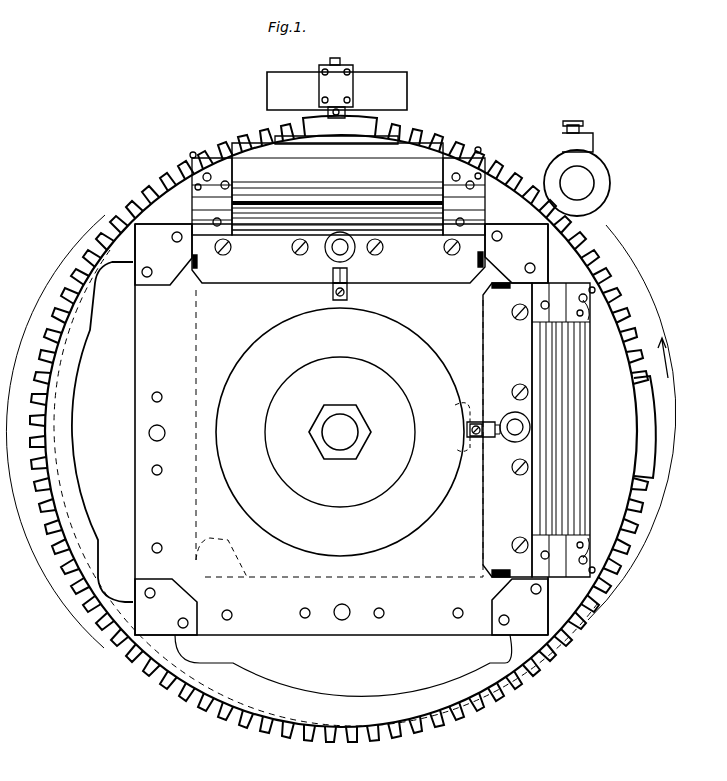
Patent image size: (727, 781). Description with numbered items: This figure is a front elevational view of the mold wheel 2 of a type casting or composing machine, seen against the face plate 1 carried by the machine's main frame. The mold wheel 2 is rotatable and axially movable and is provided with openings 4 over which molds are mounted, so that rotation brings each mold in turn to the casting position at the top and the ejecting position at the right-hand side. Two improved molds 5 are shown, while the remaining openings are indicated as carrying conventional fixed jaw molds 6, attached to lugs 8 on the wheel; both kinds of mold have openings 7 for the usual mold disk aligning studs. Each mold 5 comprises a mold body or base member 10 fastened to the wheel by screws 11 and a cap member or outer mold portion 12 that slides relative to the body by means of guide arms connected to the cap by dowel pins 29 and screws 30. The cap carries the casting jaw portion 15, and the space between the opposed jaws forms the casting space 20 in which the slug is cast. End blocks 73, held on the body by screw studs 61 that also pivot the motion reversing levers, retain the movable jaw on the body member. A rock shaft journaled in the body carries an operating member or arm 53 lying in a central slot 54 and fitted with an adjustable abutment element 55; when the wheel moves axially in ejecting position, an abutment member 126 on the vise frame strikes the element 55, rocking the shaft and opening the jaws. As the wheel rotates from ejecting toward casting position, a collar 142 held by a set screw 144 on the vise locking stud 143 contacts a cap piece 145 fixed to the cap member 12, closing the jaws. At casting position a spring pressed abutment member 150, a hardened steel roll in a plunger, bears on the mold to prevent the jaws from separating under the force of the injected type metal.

The face plate 1 is at (402, 78).
The mold wheel 2 is at (66, 302).
The openings 4 is at (130, 392).
The molds 5 is at (497, 160).
The molds of fixed jaw form 6 is at (240, 567).
The openings 7 is at (291, 247).
The lugs 8 is at (148, 222).
The mold body or base member 10 is at (254, 275).
The screws 11 is at (223, 256).
The cap member or outer mold portion 12 is at (256, 135).
The casting jaw portion 15 is at (326, 200).
The casting space 20 is at (378, 198).
The dowel pins 29 is at (210, 162).
The screws 30 is at (229, 183).
The operating member or arm 53 is at (350, 272).
The central slot 54 is at (331, 270).
The contact or abutment element 55 is at (348, 292).
The screw studs 61 is at (172, 241).
The end blocks 73 is at (217, 218).
The abutment member 126 is at (455, 405).
The collar 142 is at (605, 176).
The vise locking stud 143 is at (585, 187).
The set screw 144 is at (588, 120).
The cap piece 145 is at (355, 130).
The spring pressed abutment member 150 is at (326, 112).